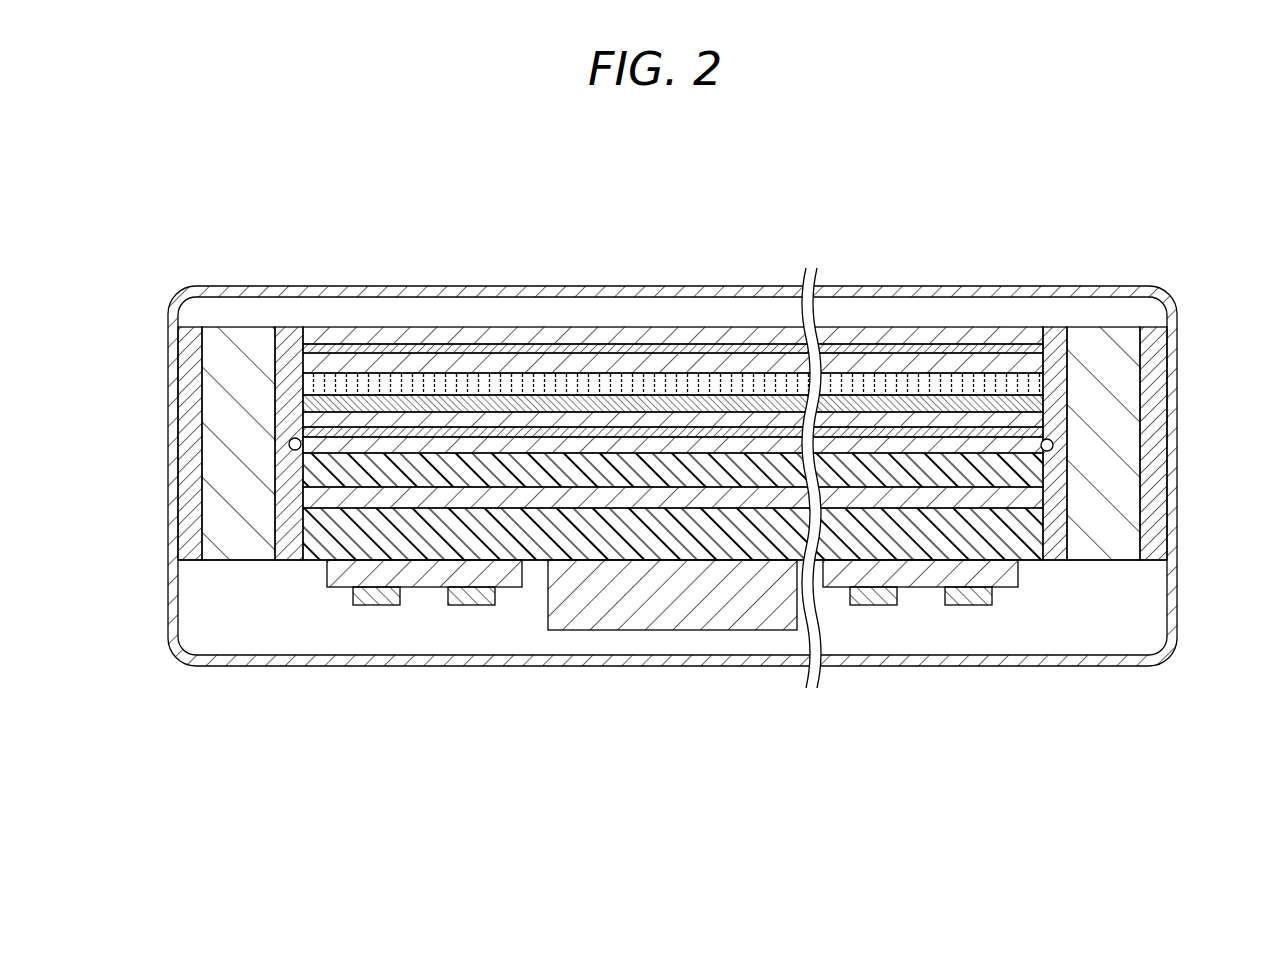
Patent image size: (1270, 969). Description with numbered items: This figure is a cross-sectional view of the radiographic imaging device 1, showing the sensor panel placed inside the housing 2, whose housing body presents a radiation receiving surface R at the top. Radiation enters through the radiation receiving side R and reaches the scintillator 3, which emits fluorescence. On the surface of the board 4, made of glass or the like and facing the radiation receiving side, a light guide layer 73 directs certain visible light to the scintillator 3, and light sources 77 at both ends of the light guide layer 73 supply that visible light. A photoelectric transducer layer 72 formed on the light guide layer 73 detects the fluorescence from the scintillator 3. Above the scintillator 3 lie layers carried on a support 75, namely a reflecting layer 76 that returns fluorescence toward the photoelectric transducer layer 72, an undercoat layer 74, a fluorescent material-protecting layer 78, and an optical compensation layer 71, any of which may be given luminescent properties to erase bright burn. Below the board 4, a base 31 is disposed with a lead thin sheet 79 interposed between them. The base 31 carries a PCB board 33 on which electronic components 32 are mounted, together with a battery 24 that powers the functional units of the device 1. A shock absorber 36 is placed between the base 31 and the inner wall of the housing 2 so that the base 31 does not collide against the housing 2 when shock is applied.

The radiographic imaging device 1 is at (674, 438).
The housing 2 is at (1058, 286).
The scintillator 3 is at (673, 333).
The board 4 is at (584, 482).
The battery 24 is at (684, 611).
The base 31 is at (644, 549).
The electronic components 32 is at (376, 606).
The PCB board 33 is at (326, 573).
The shock absorber 36 is at (240, 488).
The optical compensation layer 71 is at (1005, 420).
The photoelectric transducer layer 72 is at (950, 403).
The light guide layer 73 is at (895, 385).
The undercoat layer 74 is at (483, 365).
The support 75 is at (408, 346).
The reflecting layer 76 is at (768, 336).
The light sources 77 is at (289, 442).
The fluorescent material-protecting layer 78 is at (340, 385).
The lead thin sheet 79 is at (1040, 497).
The radiation receiving surface R is at (645, 288).